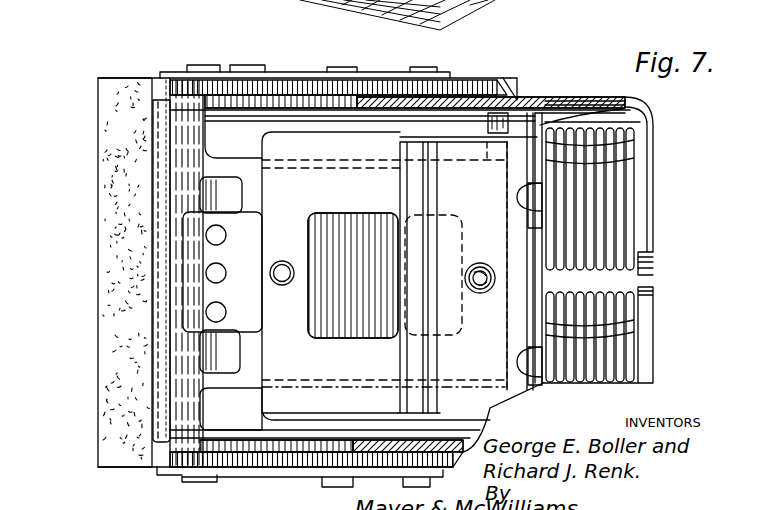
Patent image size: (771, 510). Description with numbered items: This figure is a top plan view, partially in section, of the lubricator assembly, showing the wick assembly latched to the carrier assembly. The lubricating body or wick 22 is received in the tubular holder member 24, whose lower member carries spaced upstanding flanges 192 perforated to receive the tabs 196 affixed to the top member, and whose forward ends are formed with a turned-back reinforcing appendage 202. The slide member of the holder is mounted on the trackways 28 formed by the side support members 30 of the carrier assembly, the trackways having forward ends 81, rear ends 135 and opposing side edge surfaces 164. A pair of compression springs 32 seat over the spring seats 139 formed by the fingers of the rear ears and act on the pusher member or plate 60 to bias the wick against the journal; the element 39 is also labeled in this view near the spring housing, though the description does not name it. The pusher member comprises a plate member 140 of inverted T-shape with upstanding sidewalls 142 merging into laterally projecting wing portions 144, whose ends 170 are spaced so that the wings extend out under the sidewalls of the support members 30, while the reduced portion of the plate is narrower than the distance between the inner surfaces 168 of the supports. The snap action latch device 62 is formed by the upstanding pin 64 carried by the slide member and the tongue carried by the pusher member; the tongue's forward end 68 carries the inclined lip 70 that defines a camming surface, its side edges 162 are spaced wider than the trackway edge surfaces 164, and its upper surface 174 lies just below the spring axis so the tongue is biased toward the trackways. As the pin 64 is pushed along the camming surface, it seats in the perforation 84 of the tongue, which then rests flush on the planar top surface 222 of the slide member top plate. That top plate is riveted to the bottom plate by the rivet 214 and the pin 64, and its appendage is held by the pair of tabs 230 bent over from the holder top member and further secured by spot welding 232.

The lubricating body or wick 22 is at (123, 93).
The tubular housing, trough, or holder member 24 is at (176, 89).
The tabs 196 is at (200, 62).
The upstanding flanges 192 is at (278, 74).
The inner surfaces of the supports 168 is at (288, 108).
The side support members 30 is at (390, 101).
The forward end of the tongue member / camming lip 68 is at (421, 148).
The pusher member or plate 60 is at (463, 153).
The side edges of the tongue 162 is at (515, 140).
The ends of the wing portions 170 is at (542, 95).
The wing portions 144 is at (547, 97).
The upstanding sidewalls 142 is at (553, 100).
The rear end of the trackways 135 is at (575, 102).
The plate member 140 is at (642, 101).
The shell wall 39 is at (652, 113).
The abutments or spring seats 139 is at (623, 182).
The compression springs 32 is at (630, 208).
The trackways 28 is at (209, 121).
The forward ends of the trackways 81 is at (210, 133).
The side edge surfaces of the trackways 164 is at (231, 268).
The tabs 230 is at (228, 193).
The inclined lip or rim portion 70 is at (405, 190).
The upper surface of the tongue member 174 is at (492, 209).
The planar top surface 222 is at (352, 203).
The rivet 214 is at (283, 261).
The spot welding 232 is at (212, 250).
The perforation 84 is at (465, 270).
The upstanding pin 64 is at (484, 290).
The snap action releasably locking or latching device 62 is at (447, 303).
The appendage 202 is at (158, 371).